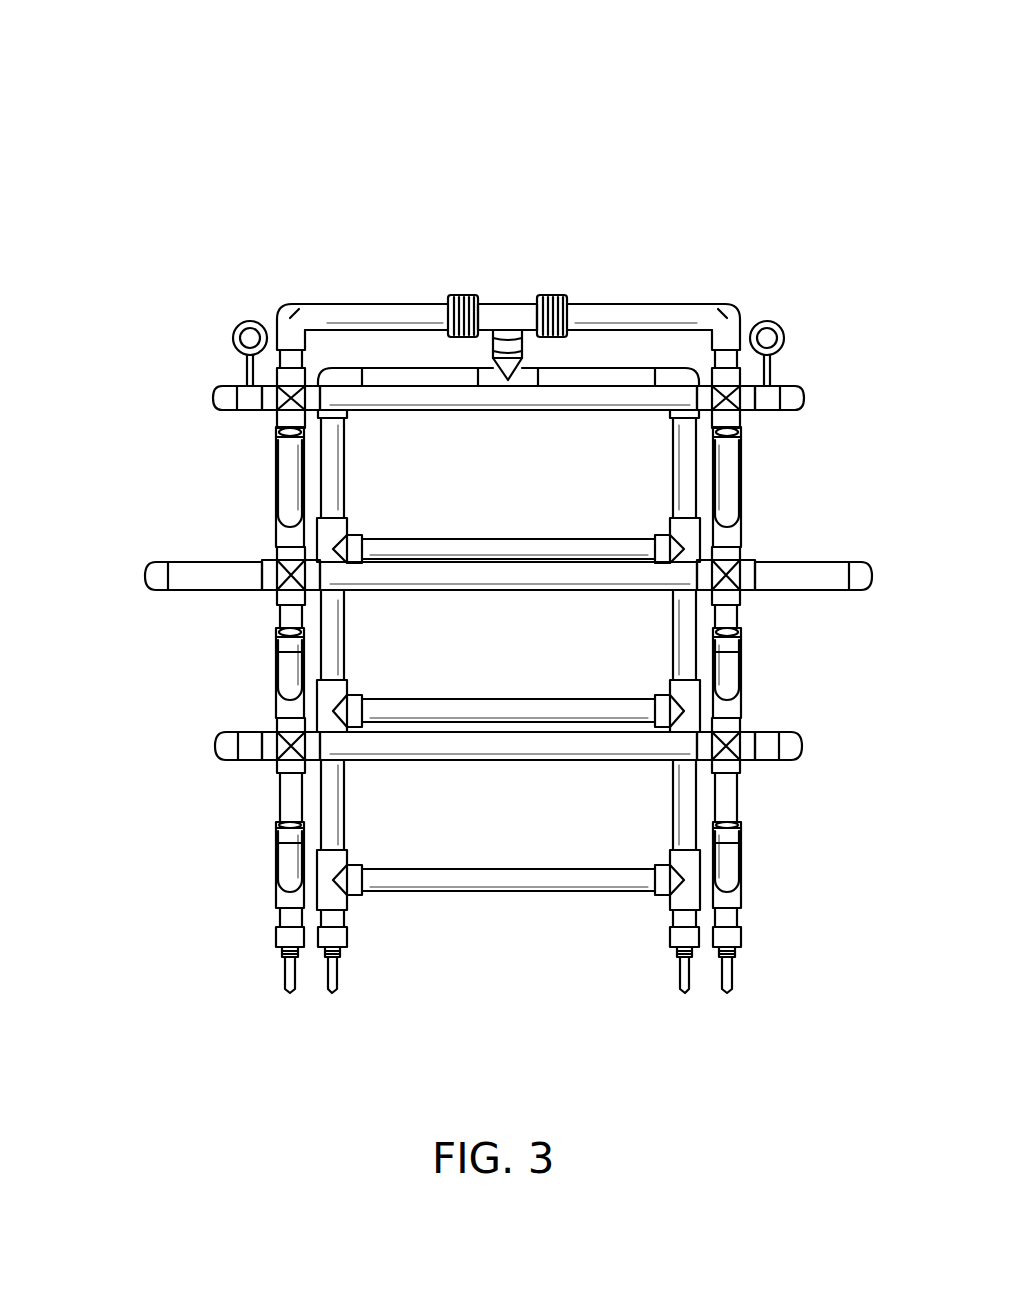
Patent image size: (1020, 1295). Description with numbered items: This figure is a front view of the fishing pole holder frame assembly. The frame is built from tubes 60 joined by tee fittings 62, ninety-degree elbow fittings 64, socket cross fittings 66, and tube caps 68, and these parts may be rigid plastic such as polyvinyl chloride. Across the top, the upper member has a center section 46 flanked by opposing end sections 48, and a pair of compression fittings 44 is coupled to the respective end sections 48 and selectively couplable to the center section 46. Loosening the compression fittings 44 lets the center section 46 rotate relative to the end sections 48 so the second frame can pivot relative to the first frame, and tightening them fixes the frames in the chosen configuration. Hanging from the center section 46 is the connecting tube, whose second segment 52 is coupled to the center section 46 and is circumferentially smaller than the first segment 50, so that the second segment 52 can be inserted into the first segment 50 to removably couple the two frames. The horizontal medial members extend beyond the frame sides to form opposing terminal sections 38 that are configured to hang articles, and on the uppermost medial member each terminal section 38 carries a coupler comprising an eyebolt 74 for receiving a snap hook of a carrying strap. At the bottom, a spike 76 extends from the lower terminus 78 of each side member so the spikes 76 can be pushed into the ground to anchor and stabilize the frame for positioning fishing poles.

The opposing terminal sections 38 is at (766, 410).
The compression fittings 44 is at (558, 297).
The center section 46 is at (503, 318).
The opposing end sections 48 is at (668, 310).
The first segment 50 is at (522, 378).
The second segment 52 is at (508, 347).
The tubes 60 is at (335, 814).
The tee fittings 62 is at (680, 703).
The 90° elbow fittings 64 is at (727, 303).
The socket cross fittings 66 is at (727, 747).
The tube caps 68 is at (220, 733).
The eyebolt 74 is at (767, 322).
The spikes 76 is at (727, 992).
The lower terminus 78 is at (725, 943).